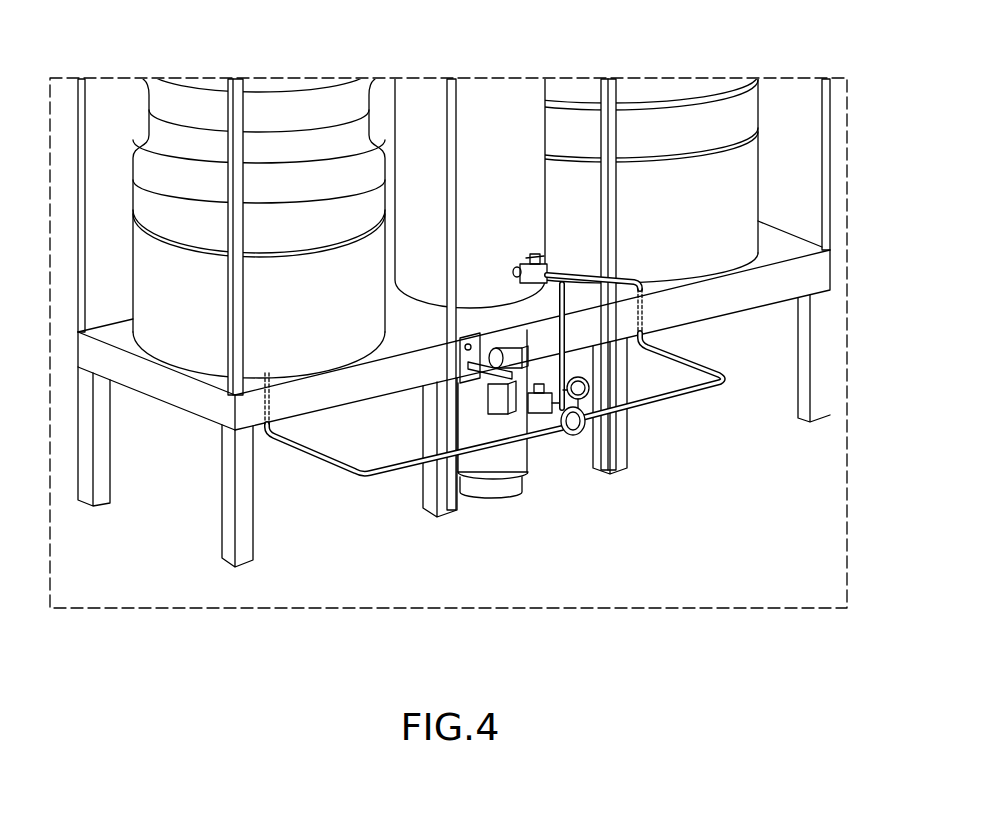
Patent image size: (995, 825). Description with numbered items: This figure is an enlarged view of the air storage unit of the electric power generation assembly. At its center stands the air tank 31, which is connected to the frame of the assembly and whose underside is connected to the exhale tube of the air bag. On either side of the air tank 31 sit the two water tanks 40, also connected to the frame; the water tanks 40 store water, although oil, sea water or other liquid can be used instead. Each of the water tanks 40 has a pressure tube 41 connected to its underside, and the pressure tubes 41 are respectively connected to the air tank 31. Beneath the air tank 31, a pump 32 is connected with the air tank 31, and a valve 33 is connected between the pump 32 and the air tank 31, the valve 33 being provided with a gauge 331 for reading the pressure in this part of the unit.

The water tank 40 is at (147, 162).
The pressure tube 41 is at (690, 393).
The air tank 31 is at (423, 227).
The pump 32 is at (493, 465).
The valve 33 is at (573, 440).
The gauge 331 is at (617, 417).